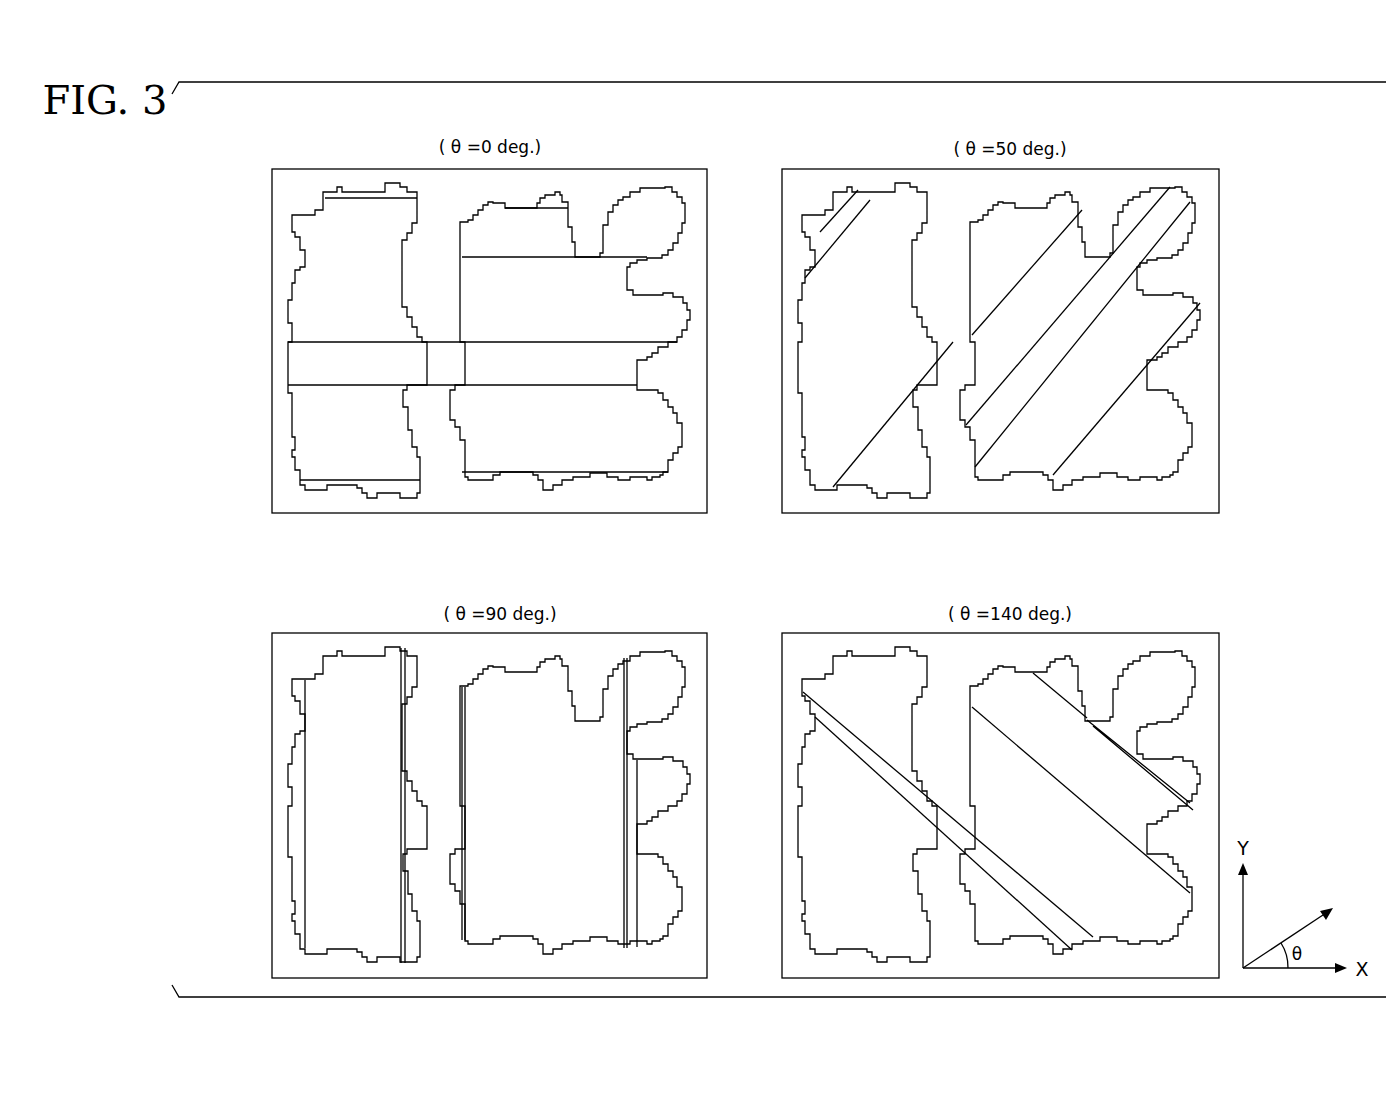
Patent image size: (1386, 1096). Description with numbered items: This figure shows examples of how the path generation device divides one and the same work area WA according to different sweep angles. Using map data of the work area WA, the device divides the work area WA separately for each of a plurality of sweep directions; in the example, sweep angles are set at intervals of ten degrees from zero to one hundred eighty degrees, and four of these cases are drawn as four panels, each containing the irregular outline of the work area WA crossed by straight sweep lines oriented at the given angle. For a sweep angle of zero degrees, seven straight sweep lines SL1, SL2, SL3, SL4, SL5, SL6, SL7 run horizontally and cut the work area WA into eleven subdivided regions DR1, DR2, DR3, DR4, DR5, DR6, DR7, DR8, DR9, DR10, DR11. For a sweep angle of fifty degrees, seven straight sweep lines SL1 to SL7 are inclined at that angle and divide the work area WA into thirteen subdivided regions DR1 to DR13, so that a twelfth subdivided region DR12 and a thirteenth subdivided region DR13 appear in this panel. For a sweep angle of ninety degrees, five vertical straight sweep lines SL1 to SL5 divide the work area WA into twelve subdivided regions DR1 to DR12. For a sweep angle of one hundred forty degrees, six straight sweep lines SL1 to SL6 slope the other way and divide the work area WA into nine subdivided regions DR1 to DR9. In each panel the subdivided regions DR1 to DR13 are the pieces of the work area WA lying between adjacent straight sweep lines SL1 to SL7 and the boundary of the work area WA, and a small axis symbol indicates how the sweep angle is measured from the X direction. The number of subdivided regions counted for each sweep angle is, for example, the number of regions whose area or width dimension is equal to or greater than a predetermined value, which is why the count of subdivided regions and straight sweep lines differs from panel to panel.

The work area WA is at (672, 188).
The first straight sweep line SL1 is at (328, 480).
The second straight sweep line SL2 is at (547, 472).
The third straight sweep line SL3 is at (540, 385).
The fourth straight sweep line SL4 is at (513, 342).
The fifth straight sweep line SL5 is at (507, 260).
The sixth straight sweep line SL6 is at (508, 217).
The seventh straight sweep line SL7 is at (345, 199).
The first subdivided region DR1 is at (392, 490).
The second subdivided region DR2 is at (632, 480).
The third subdivided region DR3 is at (1120, 620).
The fourth subdivided region DR4 is at (1258, 228).
The fifth subdivided region DR5 is at (978, 445).
The sixth subdivided region DR6 is at (717, 551).
The seventh subdivided region DR7 is at (1135, 150).
The eighth subdivided region DR8 is at (487, 240).
The ninth subdivided region DR9 is at (405, 672).
The tenth subdivided region DR10 is at (563, 197).
The eleventh subdivided region DR11 is at (397, 185).
The twelfth subdivided region DR12 is at (858, 203).
The thirteenth subdivided region DR13 is at (815, 220).